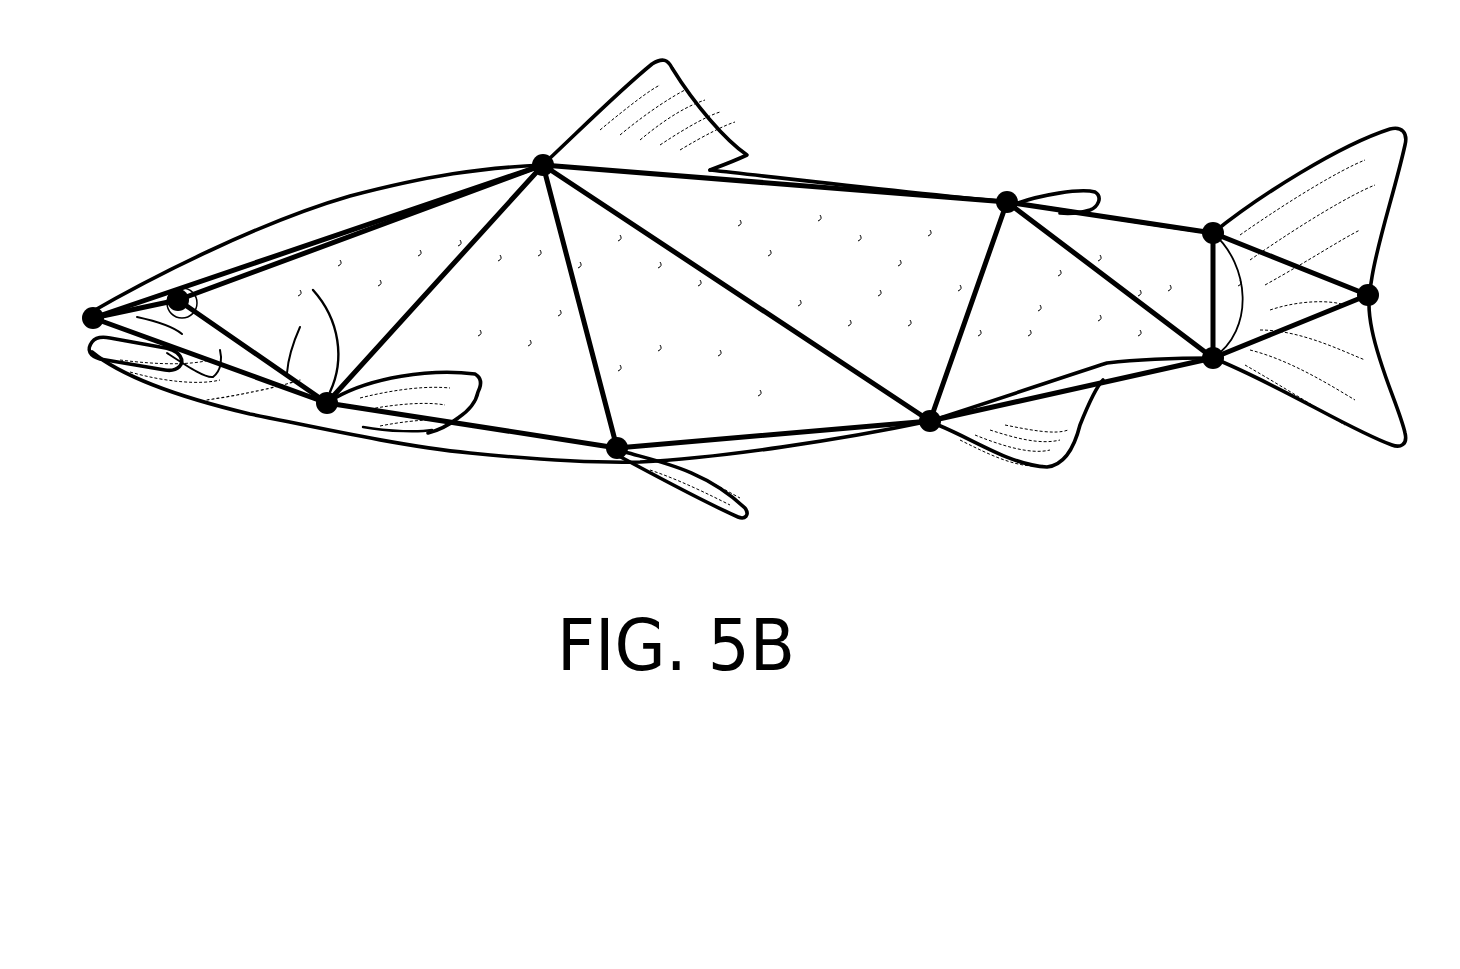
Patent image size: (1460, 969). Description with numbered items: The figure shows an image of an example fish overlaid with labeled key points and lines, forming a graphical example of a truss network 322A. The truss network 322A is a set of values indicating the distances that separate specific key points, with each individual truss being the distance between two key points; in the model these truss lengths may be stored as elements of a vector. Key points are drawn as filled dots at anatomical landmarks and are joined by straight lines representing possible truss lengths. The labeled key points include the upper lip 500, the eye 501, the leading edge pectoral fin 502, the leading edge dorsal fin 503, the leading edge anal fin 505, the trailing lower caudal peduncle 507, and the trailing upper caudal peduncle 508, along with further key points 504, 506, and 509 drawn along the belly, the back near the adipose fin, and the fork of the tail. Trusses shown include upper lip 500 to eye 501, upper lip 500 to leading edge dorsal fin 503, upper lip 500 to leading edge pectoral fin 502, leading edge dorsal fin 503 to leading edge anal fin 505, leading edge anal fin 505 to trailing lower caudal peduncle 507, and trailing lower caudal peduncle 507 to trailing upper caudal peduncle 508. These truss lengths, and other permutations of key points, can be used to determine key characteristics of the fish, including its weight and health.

The truss network 322A is at (968, 74).
The upper lip 500 is at (96, 308).
The eye 501 is at (181, 290).
The leading edge pectoral fin 502 is at (327, 414).
The leading edge dorsal fin 503 is at (540, 158).
The pelvic fin keypoint 504 is at (613, 458).
The leading edge anal fin 505 is at (936, 432).
The adipose fin keypoint 506 is at (1012, 195).
The trailing lower caudal peduncle 507 is at (1210, 368).
The trailing upper caudal peduncle 508 is at (1215, 222).
The tail fork keypoint 509 is at (1374, 304).